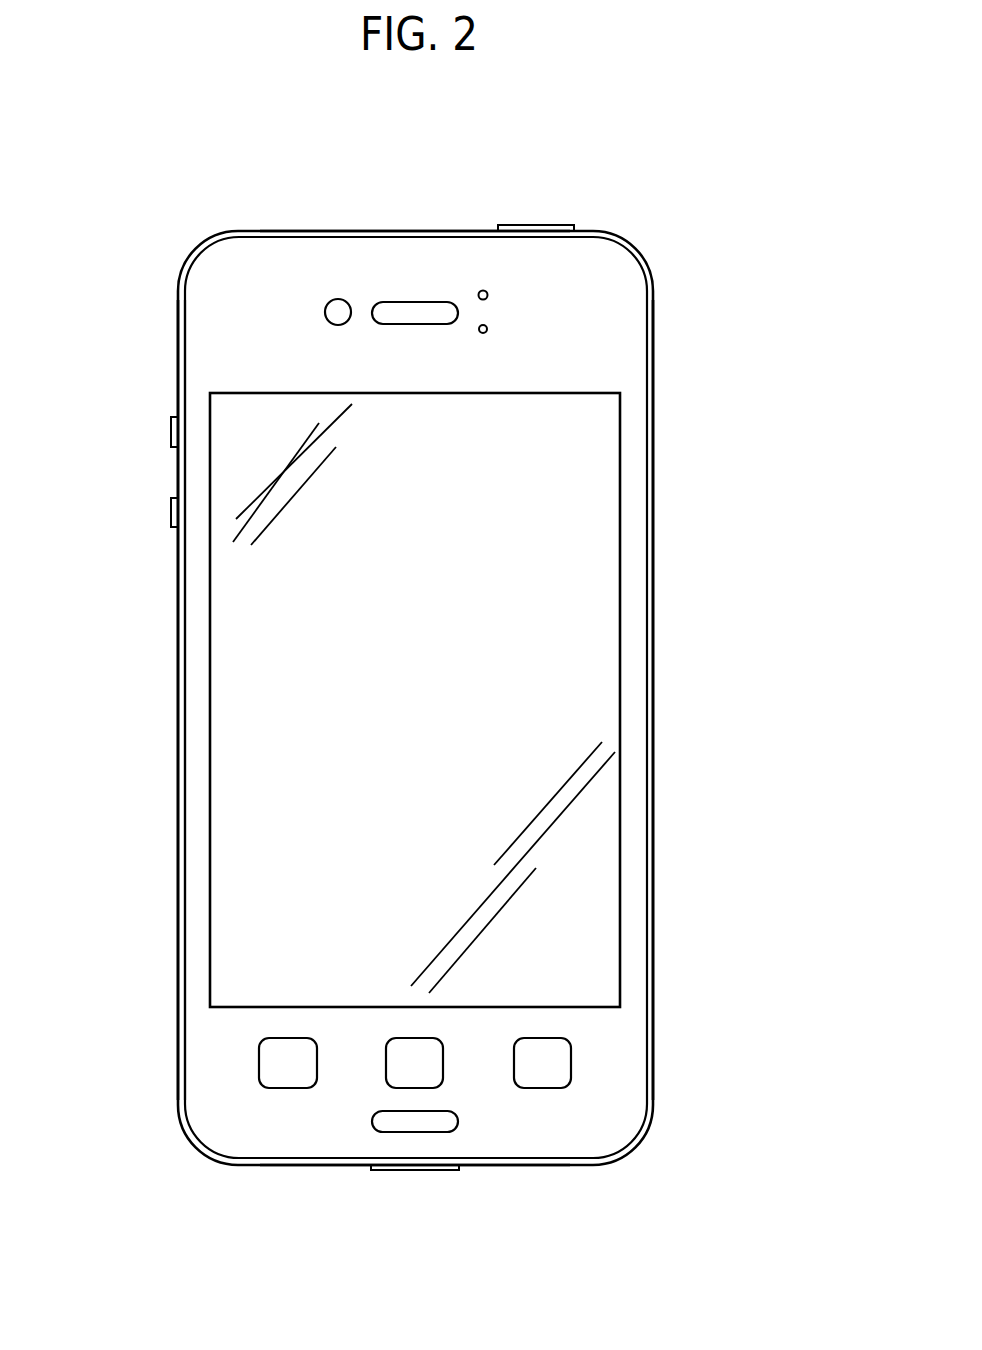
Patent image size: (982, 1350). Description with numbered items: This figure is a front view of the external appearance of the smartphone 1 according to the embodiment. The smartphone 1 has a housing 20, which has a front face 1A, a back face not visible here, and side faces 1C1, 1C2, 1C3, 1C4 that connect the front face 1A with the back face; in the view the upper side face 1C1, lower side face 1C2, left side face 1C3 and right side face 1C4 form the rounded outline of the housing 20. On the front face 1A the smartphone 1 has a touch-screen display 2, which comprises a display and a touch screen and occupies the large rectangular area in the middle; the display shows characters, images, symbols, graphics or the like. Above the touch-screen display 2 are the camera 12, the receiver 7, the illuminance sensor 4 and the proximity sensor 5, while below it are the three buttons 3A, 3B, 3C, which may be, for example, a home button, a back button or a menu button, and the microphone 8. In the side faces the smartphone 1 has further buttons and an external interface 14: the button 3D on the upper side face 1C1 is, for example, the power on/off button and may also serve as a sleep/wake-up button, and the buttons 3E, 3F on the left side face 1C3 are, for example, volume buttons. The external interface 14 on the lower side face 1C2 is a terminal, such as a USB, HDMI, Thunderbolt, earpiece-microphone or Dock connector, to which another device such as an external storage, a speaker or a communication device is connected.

The smartphone 1 is at (702, 275).
The front face 1A is at (258, 297).
The side face 1C1 is at (378, 232).
The side face 1C2 is at (505, 1167).
The side face 1C3 is at (178, 725).
The side face 1C4 is at (653, 437).
The housing 20 is at (178, 352).
The touch-screen display 2 is at (603, 544).
The camera 12 is at (338, 299).
The receiver 7 is at (412, 304).
The illuminance sensor 4 is at (483, 290).
The proximity sensor 5 is at (488, 330).
The button 3D is at (541, 224).
The button 3E is at (170, 428).
The button 3F is at (170, 508).
The button 3A is at (287, 1076).
The button 3B is at (404, 1076).
The button 3C is at (531, 1076).
The microphone 8 is at (446, 1124).
The external interface 14 is at (383, 1172).